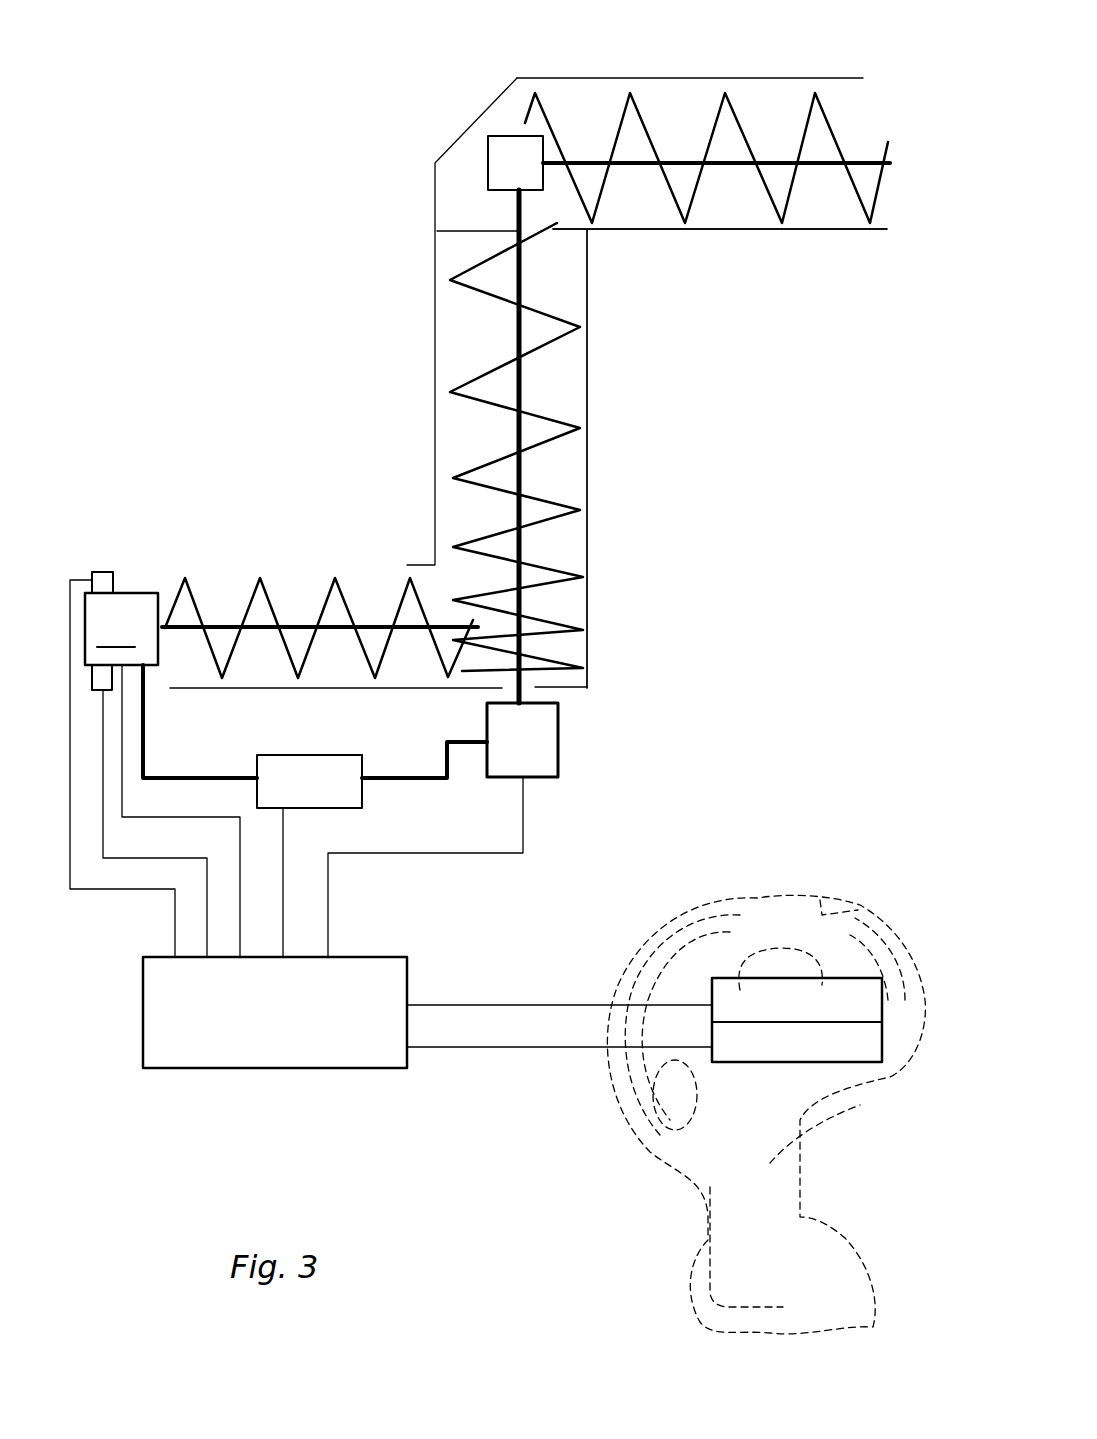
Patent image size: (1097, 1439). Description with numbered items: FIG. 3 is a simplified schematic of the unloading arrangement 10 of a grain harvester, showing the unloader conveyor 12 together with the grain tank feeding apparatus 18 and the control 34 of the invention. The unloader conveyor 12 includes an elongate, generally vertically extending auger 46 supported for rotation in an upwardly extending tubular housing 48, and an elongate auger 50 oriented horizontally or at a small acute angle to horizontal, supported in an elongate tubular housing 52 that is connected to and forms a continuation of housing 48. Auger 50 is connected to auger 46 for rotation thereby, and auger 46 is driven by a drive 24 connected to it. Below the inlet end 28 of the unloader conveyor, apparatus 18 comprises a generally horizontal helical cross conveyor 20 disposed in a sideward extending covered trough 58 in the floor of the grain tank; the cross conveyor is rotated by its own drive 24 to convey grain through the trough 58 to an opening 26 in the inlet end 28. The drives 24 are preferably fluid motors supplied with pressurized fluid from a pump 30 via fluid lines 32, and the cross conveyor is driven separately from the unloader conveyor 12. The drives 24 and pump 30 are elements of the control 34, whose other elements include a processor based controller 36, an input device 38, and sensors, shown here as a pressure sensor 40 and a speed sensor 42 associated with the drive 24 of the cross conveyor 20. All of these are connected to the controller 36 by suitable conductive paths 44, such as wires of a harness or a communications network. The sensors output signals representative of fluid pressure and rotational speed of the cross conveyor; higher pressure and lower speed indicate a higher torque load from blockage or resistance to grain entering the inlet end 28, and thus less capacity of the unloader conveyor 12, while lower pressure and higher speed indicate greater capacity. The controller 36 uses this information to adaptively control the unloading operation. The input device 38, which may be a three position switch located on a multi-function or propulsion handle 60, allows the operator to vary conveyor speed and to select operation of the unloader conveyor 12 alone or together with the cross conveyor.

The unloading system 10 is at (235, 192).
The unloader conveyor 12 is at (642, 77).
The apparatus 18 is at (230, 498).
The cross conveyor 20 is at (320, 571).
The drive 24 is at (558, 748).
The opening 26 is at (427, 578).
The inlet end 28 is at (587, 605).
The pump 30 is at (362, 795).
The fluid lines 32 is at (225, 785).
The control 34 is at (255, 1080).
The controller 36 is at (407, 982).
The input device 38 is at (855, 978).
The pressure sensor 40 is at (105, 572).
The speed sensor 42 is at (98, 692).
The conductive paths 44 is at (138, 860).
The auger 46 is at (557, 422).
The tubular housing 48 is at (587, 478).
The auger 50 is at (728, 105).
The tubular housing 52 is at (735, 232).
The covered troughs 58 is at (425, 688).
The propulsion handle 60 is at (757, 898).